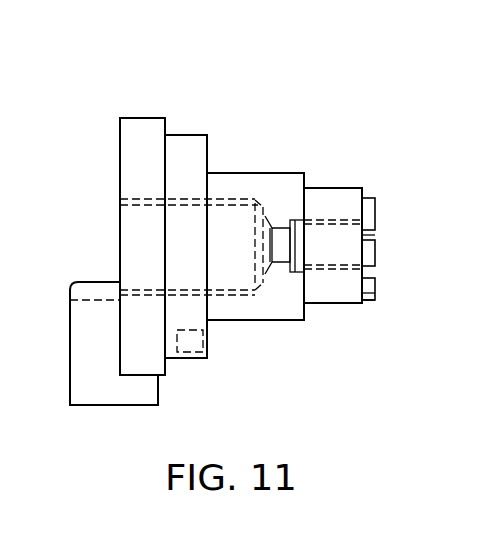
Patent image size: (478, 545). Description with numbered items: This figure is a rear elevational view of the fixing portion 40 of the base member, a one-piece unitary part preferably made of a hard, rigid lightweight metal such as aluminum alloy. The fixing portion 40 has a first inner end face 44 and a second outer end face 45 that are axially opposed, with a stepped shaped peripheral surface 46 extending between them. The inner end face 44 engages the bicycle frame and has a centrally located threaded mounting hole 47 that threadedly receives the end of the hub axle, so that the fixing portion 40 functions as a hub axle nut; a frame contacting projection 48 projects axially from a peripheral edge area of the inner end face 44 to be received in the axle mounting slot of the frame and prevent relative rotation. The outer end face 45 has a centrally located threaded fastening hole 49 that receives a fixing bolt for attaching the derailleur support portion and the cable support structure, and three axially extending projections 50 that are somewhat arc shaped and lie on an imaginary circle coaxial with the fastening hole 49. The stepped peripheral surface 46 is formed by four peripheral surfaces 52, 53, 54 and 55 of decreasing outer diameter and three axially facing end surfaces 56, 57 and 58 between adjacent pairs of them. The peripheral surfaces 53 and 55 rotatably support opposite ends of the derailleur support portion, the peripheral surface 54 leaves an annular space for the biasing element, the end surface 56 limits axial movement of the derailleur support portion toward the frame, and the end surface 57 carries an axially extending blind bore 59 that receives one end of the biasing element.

The fixing portion 40 is at (272, 118).
The first inner end face 44 is at (120, 165).
The second outer end face 45 is at (376, 297).
The stepped shaped peripheral surface 46 is at (270, 323).
The threaded mounting hole 47 is at (147, 288).
The frame contacting projection 48 is at (98, 406).
The threaded fastening hole 49 is at (330, 236).
The axially extending projections 50 is at (375, 288).
The peripheral surface 52 is at (140, 118).
The peripheral surface 53 is at (189, 133).
The peripheral surface 54 is at (288, 172).
The peripheral surface 55 is at (345, 188).
The axially facing end surface 56 is at (167, 129).
The axially facing end surface 57 is at (207, 156).
The axially facing end surface 58 is at (308, 184).
The axially extending blind bore 59 is at (203, 340).